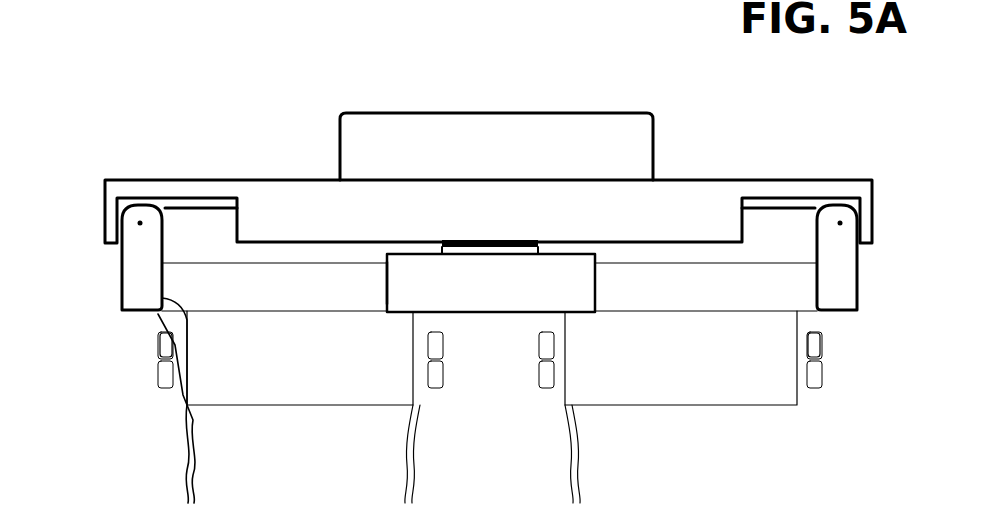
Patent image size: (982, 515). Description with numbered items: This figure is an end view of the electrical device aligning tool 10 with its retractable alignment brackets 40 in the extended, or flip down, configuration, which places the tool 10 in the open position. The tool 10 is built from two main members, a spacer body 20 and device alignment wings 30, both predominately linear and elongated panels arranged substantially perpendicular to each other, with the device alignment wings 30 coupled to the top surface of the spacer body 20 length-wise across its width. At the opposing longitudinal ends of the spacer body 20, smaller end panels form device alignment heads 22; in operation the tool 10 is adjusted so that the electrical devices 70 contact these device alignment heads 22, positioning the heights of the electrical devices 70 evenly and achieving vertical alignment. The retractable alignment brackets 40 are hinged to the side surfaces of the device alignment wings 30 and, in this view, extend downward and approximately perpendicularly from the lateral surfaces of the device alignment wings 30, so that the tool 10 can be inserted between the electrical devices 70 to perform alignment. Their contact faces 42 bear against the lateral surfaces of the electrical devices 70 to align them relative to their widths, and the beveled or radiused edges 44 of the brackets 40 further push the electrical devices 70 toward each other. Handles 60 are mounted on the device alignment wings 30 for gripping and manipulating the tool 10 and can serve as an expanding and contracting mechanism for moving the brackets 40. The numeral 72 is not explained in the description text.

The electrical device aligning tool 10 is at (423, 80).
The spacer body 20 is at (505, 314).
The device alignment heads 22 is at (385, 290).
The device alignment wings 30 is at (267, 180).
The retractable alignment brackets 40 is at (122, 281).
The contact faces 42 is at (176, 352).
The beveled or radiused edges 44 is at (157, 318).
The handles 60 is at (654, 128).
The electrical devices 70 is at (703, 406).
The board pad 72 is at (818, 313).